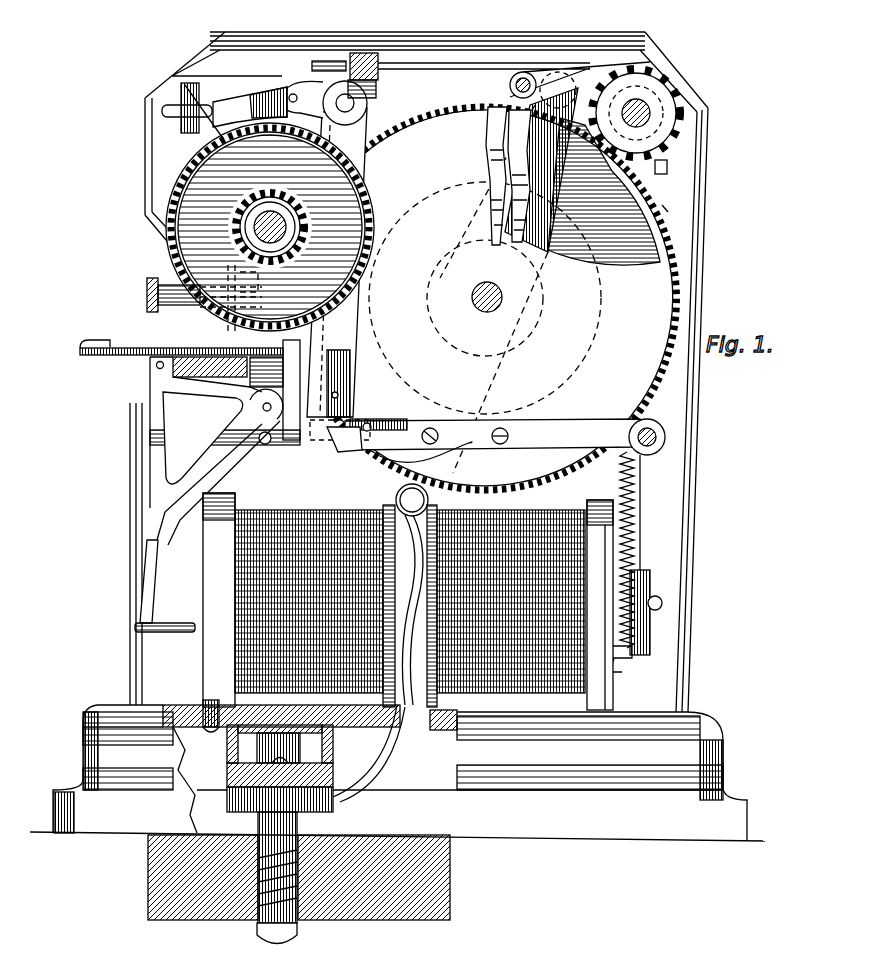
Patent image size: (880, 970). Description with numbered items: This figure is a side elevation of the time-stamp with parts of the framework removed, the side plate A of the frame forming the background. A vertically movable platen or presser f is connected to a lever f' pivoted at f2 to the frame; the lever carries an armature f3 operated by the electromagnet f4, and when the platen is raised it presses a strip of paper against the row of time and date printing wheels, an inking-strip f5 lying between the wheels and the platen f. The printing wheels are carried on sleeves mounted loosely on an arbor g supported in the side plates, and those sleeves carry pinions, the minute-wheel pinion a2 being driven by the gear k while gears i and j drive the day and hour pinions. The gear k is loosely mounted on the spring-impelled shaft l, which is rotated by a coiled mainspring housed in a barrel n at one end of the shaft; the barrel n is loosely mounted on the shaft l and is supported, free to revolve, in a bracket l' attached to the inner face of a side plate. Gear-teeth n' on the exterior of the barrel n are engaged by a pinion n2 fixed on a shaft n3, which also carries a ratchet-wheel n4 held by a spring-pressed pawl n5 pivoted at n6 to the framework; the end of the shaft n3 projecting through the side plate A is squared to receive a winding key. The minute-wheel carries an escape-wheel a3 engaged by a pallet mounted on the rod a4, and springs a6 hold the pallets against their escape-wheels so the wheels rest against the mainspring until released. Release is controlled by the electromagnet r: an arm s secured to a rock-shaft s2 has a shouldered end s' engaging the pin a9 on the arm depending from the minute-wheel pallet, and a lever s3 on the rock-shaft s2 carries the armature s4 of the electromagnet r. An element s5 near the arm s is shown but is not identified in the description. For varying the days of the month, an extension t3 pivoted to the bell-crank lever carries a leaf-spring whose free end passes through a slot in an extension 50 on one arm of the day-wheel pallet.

The side plate A is at (128, 495).
The driving gear k is at (497, 297).
The shaft l is at (487, 316).
The barrel n is at (600, 191).
The gear-teeth n' is at (671, 203).
The pinion n2 is at (667, 171).
The bracket l' is at (541, 170).
The driving gear j is at (496, 176).
The driving gear i is at (519, 176).
The arbor g is at (245, 233).
The escape-wheel a3 is at (256, 232).
The pinion a2 is at (356, 331).
The rod or bar a4 is at (352, 106).
The extension t3 is at (182, 92).
The extension 50 is at (179, 113).
The springs a6 is at (313, 67).
The spring-pressed pawl n5 is at (592, 66).
The pivot n6 is at (526, 79).
The ratchet-wheel n4 is at (660, 93).
The shaft n3 is at (640, 115).
The inking-strip f5 is at (215, 330).
The platen f is at (181, 342).
The pivot f2 is at (155, 366).
The lever f' is at (225, 451).
The armature f3 is at (156, 592).
The arm s is at (492, 428).
The pad s5 is at (360, 442).
The shouldered end s' is at (345, 408).
The pin or stud a9 is at (337, 423).
The rock-shaft s2 is at (648, 428).
The lever s3 is at (640, 508).
The armature s4 is at (632, 640).
The electromagnet f4 is at (330, 497).
The electromagnet r is at (507, 518).